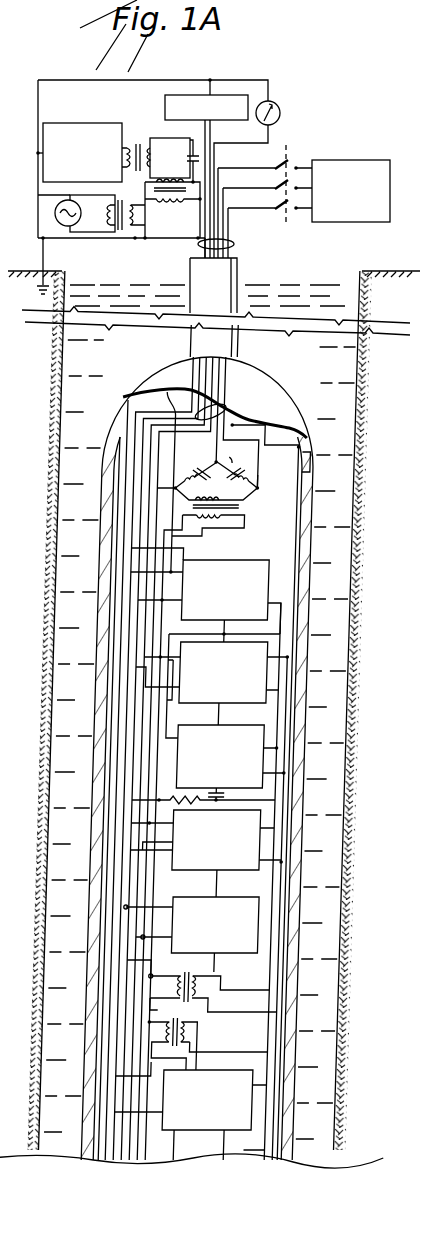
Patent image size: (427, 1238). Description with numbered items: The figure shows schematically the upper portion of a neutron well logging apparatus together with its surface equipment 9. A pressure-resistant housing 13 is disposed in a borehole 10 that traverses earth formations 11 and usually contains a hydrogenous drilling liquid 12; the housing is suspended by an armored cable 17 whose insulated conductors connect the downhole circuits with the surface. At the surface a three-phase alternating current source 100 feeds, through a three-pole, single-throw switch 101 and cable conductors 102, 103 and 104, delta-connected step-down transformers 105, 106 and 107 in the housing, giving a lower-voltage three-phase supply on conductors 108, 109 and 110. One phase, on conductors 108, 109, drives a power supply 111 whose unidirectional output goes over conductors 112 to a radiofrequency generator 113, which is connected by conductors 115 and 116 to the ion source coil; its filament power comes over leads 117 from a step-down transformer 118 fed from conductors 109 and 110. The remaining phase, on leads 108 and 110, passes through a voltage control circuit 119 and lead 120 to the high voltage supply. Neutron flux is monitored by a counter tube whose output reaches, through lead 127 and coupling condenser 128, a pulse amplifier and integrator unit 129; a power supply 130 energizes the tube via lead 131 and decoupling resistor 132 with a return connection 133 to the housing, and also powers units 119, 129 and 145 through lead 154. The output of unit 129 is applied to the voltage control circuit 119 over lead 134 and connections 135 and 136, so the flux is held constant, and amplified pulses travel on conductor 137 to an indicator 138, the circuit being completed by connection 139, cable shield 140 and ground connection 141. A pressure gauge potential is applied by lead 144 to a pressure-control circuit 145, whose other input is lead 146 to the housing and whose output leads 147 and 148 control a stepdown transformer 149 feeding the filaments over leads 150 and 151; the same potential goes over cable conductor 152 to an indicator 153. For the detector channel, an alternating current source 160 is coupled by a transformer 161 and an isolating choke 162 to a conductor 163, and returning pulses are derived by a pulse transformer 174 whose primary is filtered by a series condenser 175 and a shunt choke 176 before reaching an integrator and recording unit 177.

The surface equipment 9 is at (374, 137).
The borehole 10 is at (362, 280).
The earth formations 11 is at (378, 382).
The hydrogenous drilling liquid 12 is at (287, 292).
The pressure-resistant housing 13 is at (254, 368).
The armored cable 17 is at (239, 262).
The three-phase alternating current source 100 is at (384, 160).
The three-pole, single-throw switch 101 is at (290, 148).
The cable conductor 102 is at (227, 168).
The cable conductor 103 is at (231, 188).
The cable conductor 104 is at (233, 208).
The step-down transformer 105 is at (168, 480).
The step-down transformer 106 is at (248, 486).
The step-down transformer 107 is at (240, 516).
The conductor 108 is at (130, 548).
The conductor 109 is at (130, 572).
The conductor 110 is at (138, 600).
The power supply 111 is at (232, 890).
The conductors 112 is at (290, 978).
The radiofrequency generator 113 is at (290, 1086).
The conductor 115 is at (193, 1141).
The conductor 116 is at (281, 1150).
The leads 117 is at (292, 1010).
The step-down transformer 118 is at (197, 968).
The voltage control circuit 119 is at (292, 655).
The lead 120 is at (138, 700).
The lead 127 is at (290, 1050).
The coupling condenser 128 is at (250, 800).
The pulse amplifier and integrator unit 129 is at (290, 740).
The power supply 130 is at (196, 556).
The lead 131 is at (146, 657).
The decoupling resistor 132 is at (138, 800).
The connection 133 is at (284, 570).
The lead 134 is at (223, 716).
The connection 135 is at (290, 668).
The connection 136 is at (292, 778).
The conductor 137 is at (214, 134).
The indicator 138 is at (172, 95).
The connection 139 is at (298, 440).
The cable shield 140 is at (236, 244).
The ground connection 141 is at (54, 241).
The lead 144 is at (165, 1045).
The pressure-control circuit 145 is at (290, 830).
The lead 146 is at (292, 870).
The output circuit lead 147 is at (138, 823).
The output circuit lead 148 is at (138, 850).
The stepdown transformer 149 is at (162, 1022).
The lead 150 is at (130, 1076).
The lead 151 is at (130, 1112).
The cable conductor 152 is at (272, 136).
The indicator 153 is at (282, 111).
The lead 154 is at (290, 700).
The source of alternating current 160 is at (55, 205).
The transformer 161 is at (124, 232).
The isolating choke 162 is at (173, 208).
The conductor 163 is at (204, 250).
The pulse transformer 174 is at (138, 136).
The series condenser 175 is at (192, 142).
The shunt choke 176 is at (164, 157).
The integrator and recording unit 177 is at (62, 123).